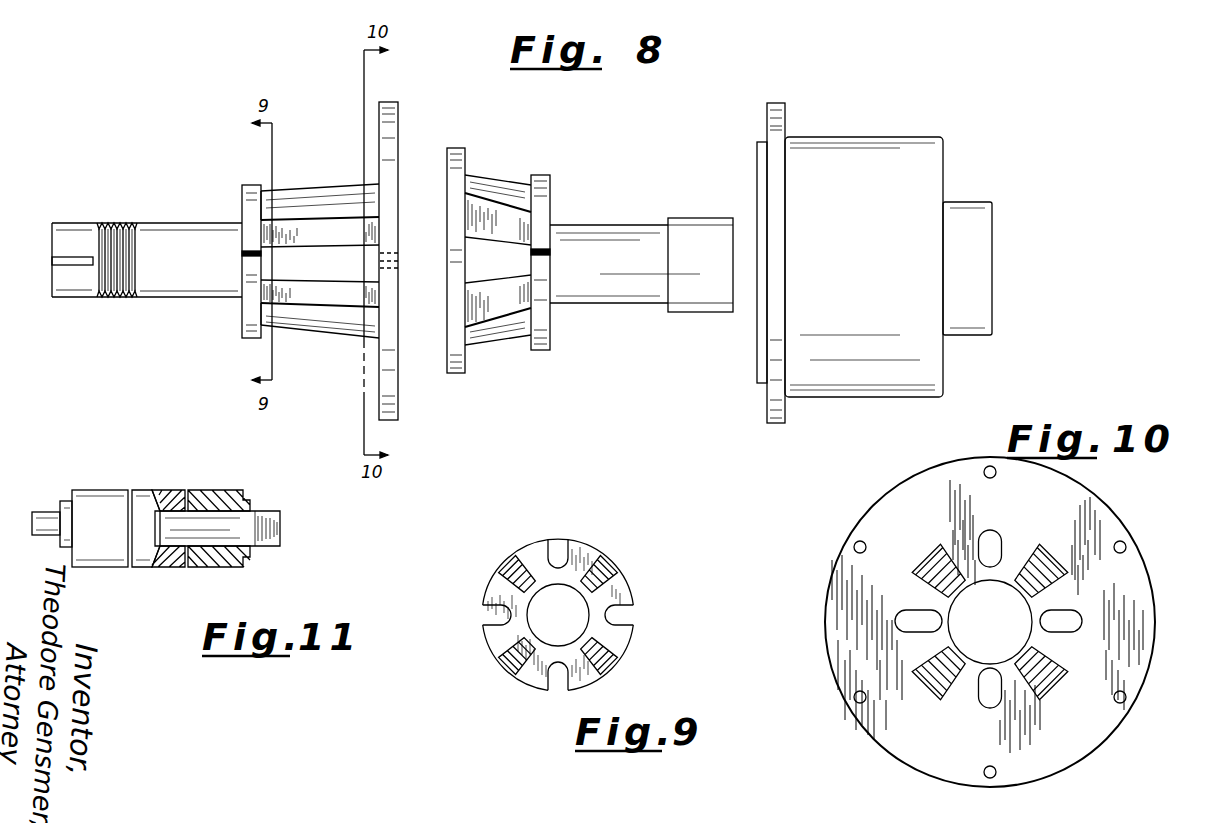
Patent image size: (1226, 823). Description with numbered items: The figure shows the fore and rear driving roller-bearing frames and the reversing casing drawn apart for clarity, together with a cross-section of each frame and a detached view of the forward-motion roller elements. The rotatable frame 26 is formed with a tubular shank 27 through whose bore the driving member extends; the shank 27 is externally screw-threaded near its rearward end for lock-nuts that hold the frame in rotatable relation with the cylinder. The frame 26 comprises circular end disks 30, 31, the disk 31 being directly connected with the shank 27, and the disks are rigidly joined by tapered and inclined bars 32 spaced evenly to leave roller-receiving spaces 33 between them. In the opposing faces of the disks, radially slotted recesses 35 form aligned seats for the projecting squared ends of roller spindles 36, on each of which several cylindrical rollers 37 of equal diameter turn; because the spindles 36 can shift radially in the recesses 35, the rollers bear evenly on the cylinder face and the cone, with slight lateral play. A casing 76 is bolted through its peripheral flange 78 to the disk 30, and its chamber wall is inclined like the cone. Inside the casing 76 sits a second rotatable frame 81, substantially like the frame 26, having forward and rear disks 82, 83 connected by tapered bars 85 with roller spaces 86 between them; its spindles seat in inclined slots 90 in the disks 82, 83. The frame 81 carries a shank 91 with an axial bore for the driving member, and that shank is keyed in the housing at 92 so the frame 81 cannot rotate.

In FIG. 8, the rotatable frame 26 is at (320, 261).
In FIG. 8, the tubular shank 27 is at (184, 288).
In FIG. 8, the circular end disk 30 is at (392, 140).
In FIG. 10, the circular end disk 30 is at (892, 508).
In FIG. 8, the circular end disk 31 is at (252, 193).
In FIG. 9, the circular end disk 31 is at (533, 550).
In FIG. 8, the tapered and inclined bars 32 is at (314, 228).
In FIG. 9, the tapered and inclined bars 32 is at (534, 636).
In FIG. 10, the tapered and inclined bars 32 is at (1027, 596).
In FIG. 8, the roller-receiving spaces 33 is at (345, 252).
In FIG. 8, the radially slotted recesses 35 is at (243, 258).
In FIG. 9, the radially slotted recesses 35 is at (560, 558).
In FIG. 10, the radially slotted recesses 35 is at (990, 566).
In FIG. 11, the roller spindles 36 is at (199, 522).
In FIG. 11, the cylindrical rollers 37 is at (197, 487).
In FIG. 8, the casing 76 is at (835, 148).
In FIG. 8, the peripheral flange 78 is at (768, 118).
In FIG. 8, the rotatable frame 81 is at (498, 260).
In FIG. 8, the forward disk 82 is at (543, 212).
In FIG. 8, the rear disk 83 is at (452, 189).
In FIG. 8, the tapered bars 85 is at (506, 230).
In FIG. 8, the roller spaces 86 is at (520, 251).
In FIG. 8, the slots 90 is at (440, 263).
In FIG. 8, the shank 91 is at (637, 285).
In FIG. 8, the key 92 is at (708, 226).